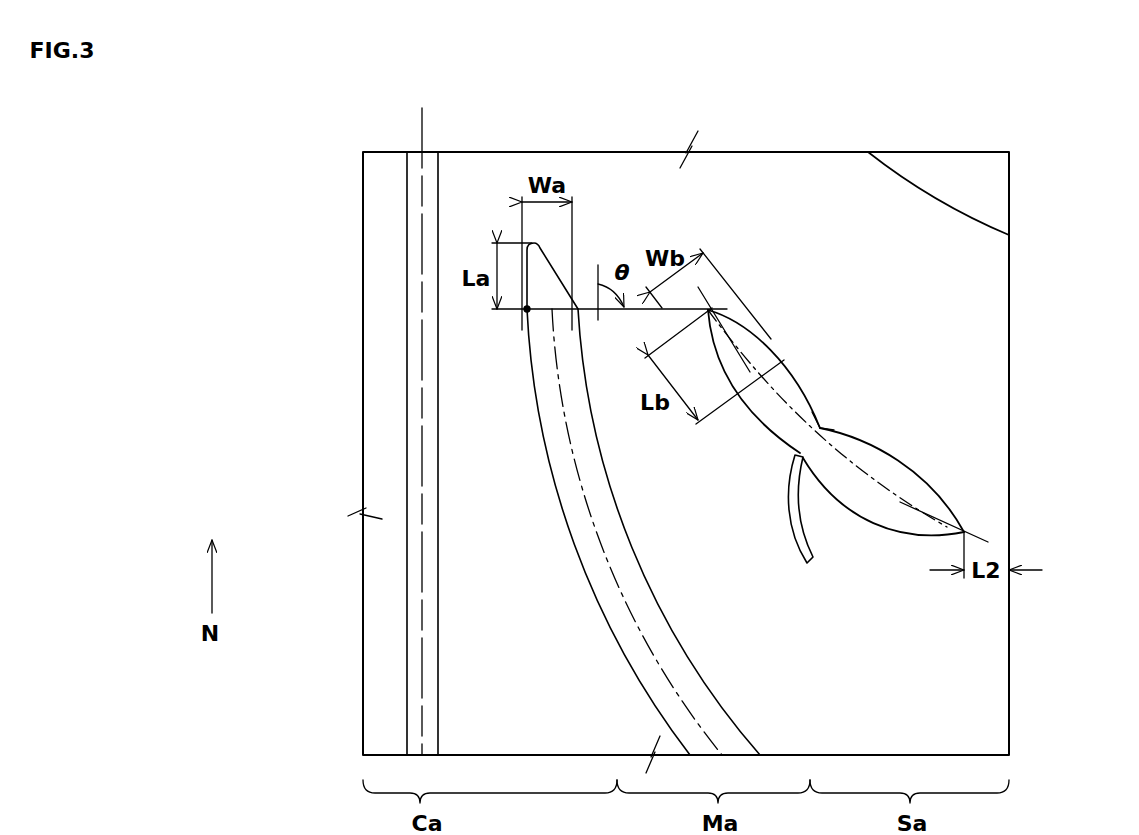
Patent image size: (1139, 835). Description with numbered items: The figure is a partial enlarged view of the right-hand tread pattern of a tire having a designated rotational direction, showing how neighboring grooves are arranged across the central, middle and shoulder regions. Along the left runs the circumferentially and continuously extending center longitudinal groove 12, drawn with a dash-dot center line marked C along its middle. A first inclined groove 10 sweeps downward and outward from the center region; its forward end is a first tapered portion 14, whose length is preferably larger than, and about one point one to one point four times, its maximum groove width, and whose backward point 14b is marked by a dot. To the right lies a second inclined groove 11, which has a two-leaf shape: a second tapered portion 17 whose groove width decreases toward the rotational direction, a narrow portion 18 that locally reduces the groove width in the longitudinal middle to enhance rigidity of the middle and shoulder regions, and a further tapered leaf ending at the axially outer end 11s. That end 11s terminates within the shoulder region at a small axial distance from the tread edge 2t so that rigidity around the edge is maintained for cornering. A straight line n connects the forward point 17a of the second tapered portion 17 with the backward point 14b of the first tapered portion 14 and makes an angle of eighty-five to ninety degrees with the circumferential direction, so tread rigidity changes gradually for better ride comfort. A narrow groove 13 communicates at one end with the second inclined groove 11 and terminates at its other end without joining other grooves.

The tread edge 2t is at (1009, 270).
The first inclined groove 10 is at (610, 607).
The second inclined groove 11 is at (898, 477).
The axially outer end of the second inclined groove 11s is at (964, 532).
The center longitudinal groove 12 is at (430, 185).
The narrow groove 13 is at (812, 553).
The first tapered portion 14 is at (560, 297).
The backward of the first tapered portion 14b is at (527, 309).
The second tapered portion 17 is at (752, 352).
The forward of the second tapered portion 17a is at (708, 310).
The narrow portion 18 is at (832, 422).
The straight line n is at (636, 310).
The tire equator C is at (422, 410).